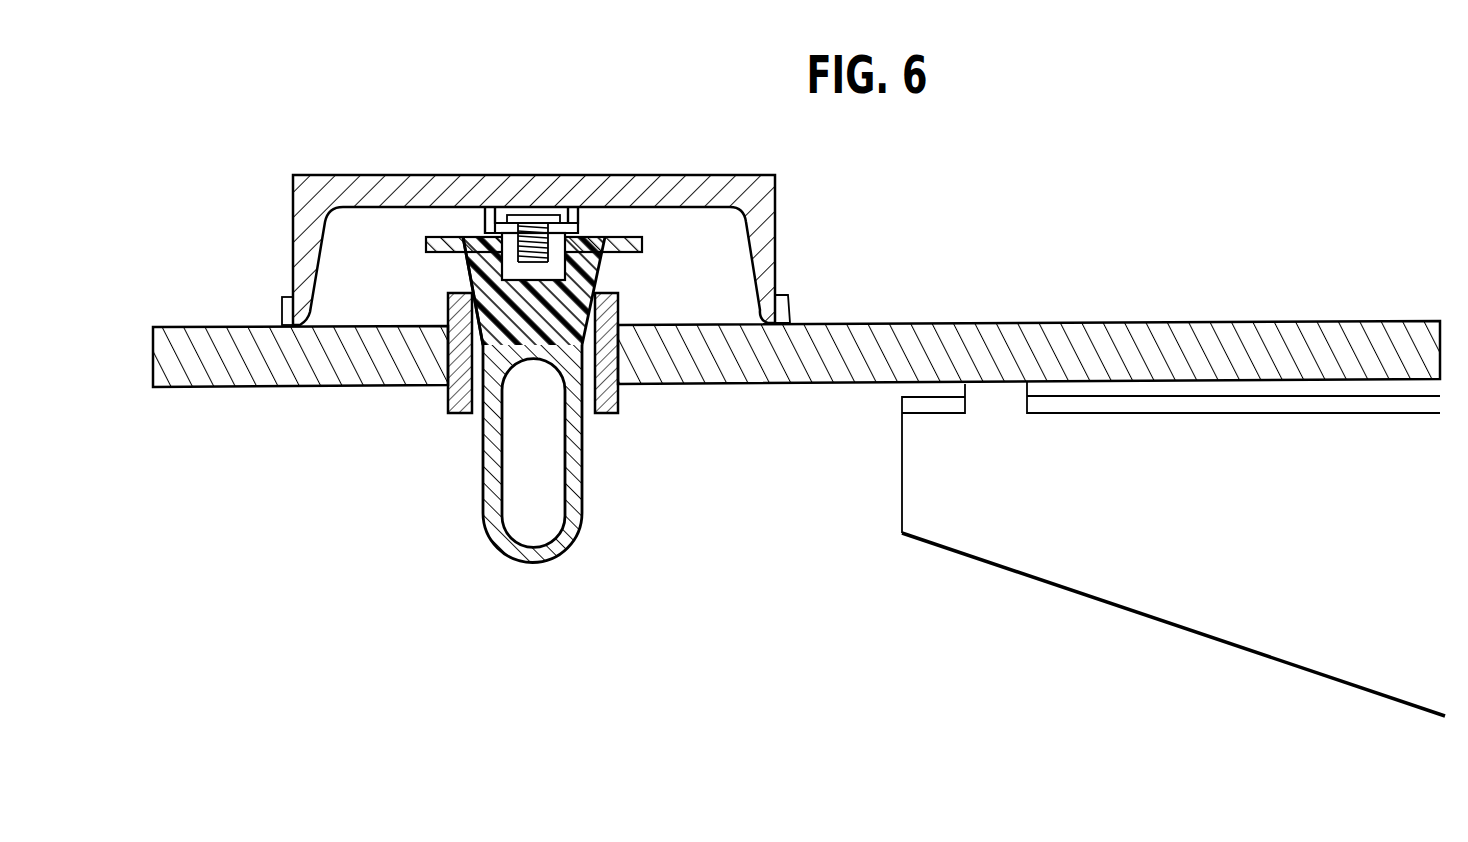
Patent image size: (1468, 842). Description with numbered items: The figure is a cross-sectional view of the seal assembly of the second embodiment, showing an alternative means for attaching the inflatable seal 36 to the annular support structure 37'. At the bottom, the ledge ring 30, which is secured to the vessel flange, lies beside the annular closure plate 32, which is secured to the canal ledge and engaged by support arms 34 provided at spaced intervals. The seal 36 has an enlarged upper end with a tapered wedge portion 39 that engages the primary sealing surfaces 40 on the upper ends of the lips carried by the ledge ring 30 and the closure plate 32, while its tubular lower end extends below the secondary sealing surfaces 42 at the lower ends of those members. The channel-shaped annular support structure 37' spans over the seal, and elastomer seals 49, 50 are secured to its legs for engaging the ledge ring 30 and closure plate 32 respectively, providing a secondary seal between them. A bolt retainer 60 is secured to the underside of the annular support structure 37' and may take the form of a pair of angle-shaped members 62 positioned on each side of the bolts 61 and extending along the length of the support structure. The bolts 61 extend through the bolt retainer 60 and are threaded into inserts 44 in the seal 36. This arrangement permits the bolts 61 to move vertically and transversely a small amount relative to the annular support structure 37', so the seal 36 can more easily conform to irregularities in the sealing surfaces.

The ledge ring 30 is at (190, 393).
The closure plate 32 is at (1185, 318).
The support arms 34 is at (1163, 593).
The inflatable seal 36 is at (479, 508).
The annular support structure 37' is at (534, 216).
The tapered wedge portion 39 is at (466, 275).
The primary sealing surfaces 40 is at (601, 285).
The secondary sealing surfaces 42 is at (604, 415).
The inserts 44 is at (483, 248).
The elastomer seal 49 is at (281, 312).
The elastomer seal 50 is at (786, 296).
The bolt retainer 60 is at (591, 211).
The bolts 61 is at (536, 205).
The angle-shaped members 62 is at (481, 207).